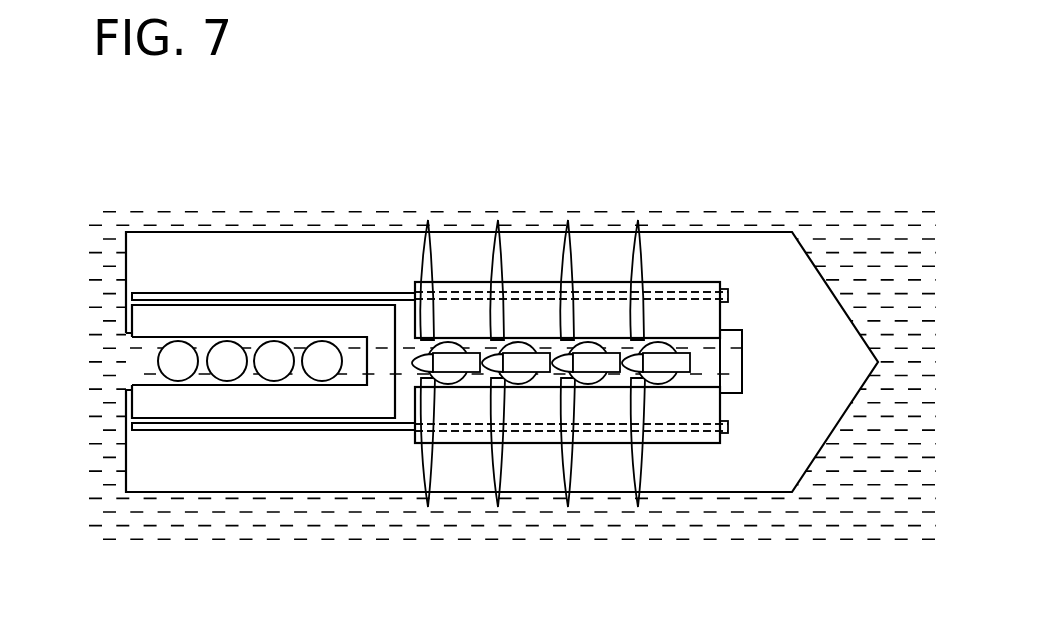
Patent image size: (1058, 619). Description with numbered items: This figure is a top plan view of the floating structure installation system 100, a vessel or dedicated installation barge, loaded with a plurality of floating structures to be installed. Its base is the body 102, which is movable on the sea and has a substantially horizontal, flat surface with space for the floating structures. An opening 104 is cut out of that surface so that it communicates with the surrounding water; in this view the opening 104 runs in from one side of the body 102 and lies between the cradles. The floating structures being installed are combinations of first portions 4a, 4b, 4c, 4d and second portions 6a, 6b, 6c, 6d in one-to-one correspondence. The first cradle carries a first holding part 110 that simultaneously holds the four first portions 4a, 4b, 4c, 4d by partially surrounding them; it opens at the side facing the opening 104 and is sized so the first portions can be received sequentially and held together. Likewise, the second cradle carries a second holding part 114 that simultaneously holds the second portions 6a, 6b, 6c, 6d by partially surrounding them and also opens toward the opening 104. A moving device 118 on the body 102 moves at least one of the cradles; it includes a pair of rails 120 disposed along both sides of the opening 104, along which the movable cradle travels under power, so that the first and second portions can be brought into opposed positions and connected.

The floating structure installation system 100 is at (772, 132).
The body 102 is at (300, 493).
The opening 104 is at (128, 363).
The first holding part 110 is at (203, 330).
The first portion 4a is at (178, 380).
The first portion 4b is at (227, 380).
The first portion 4c is at (274, 380).
The first portion 4d is at (322, 380).
The second portion 6a is at (450, 386).
The second portion 6b is at (520, 386).
The second portion 6c is at (590, 386).
The second portion 6d is at (660, 386).
The second holding part 114 is at (667, 342).
The moving device 118 is at (690, 292).
The rails 120 is at (571, 361).